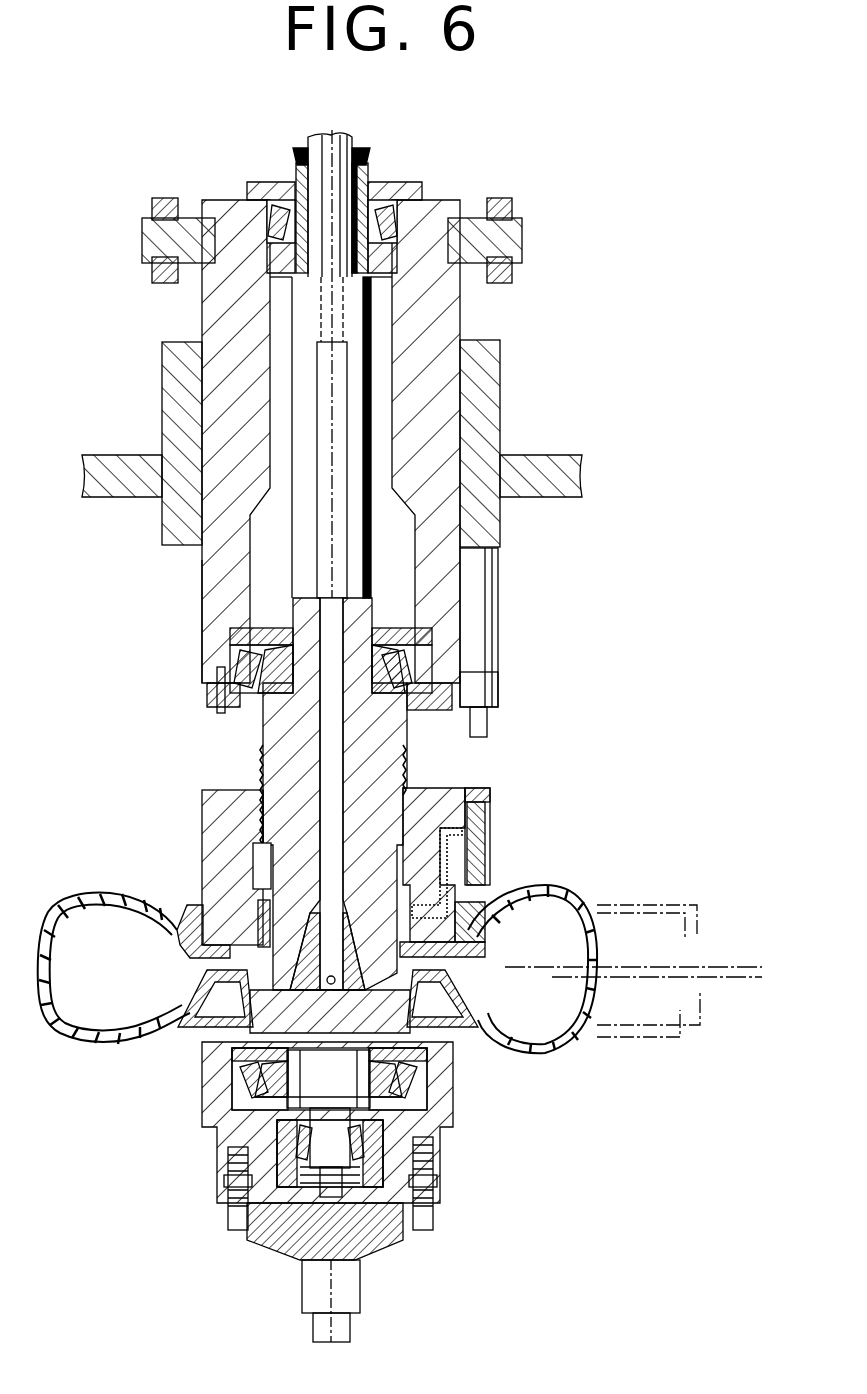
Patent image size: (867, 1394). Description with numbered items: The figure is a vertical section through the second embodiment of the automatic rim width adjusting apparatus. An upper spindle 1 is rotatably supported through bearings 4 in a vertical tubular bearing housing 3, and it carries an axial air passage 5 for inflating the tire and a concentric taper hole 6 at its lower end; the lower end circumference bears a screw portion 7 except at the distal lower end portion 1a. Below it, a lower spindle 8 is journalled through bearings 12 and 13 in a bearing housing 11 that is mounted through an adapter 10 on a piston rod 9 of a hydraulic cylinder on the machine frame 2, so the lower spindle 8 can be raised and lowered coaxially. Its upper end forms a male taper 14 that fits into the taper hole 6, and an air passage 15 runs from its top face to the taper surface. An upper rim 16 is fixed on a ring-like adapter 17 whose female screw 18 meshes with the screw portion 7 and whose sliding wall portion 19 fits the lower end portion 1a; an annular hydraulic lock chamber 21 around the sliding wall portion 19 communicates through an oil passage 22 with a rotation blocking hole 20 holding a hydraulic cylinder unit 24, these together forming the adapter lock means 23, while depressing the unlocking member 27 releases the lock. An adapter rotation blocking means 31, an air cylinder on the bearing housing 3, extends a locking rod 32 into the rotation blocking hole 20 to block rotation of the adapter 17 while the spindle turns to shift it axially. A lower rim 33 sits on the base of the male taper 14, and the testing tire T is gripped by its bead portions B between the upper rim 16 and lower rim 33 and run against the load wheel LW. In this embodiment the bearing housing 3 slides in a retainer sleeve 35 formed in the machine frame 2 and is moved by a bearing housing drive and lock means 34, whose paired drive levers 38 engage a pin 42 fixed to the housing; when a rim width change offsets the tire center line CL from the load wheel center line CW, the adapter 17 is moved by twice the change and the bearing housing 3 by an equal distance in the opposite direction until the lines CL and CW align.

The upper spindle 1 is at (300, 418).
The distal lower end portion 1a is at (250, 860).
The machine frame 2 is at (545, 495).
The bearing housing 3 is at (205, 585).
The bearings 4 is at (385, 195).
The axial air passage 5 is at (330, 604).
The taper hole 6 is at (262, 920).
The screw portion 7 is at (265, 760).
The lower spindle 8 is at (325, 1165).
The piston rod 9 is at (362, 1283).
The adapter 10 is at (385, 1225).
The bearing housing 11 is at (205, 1125).
The bearing 12 is at (245, 1083).
The bearing 13 is at (270, 1140).
The male taper 14 is at (190, 905).
The air passage 15 is at (250, 1040).
The upper rim 16 is at (480, 900).
The adapter 17 is at (415, 790).
The female screw 18 is at (262, 800).
The sliding wall portion 19 is at (258, 870).
The rotation blocking hole 20 is at (483, 792).
The hydraulic lock chamber 21 is at (195, 975).
The oil passage 22 is at (452, 828).
The adapter lock means 23 is at (496, 823).
The hydraulic cylinder unit 24 is at (470, 840).
The unlocking member 27 is at (495, 810).
The adapter rotation blocking means 31 is at (498, 640).
The locking rod 32 is at (498, 695).
The lower rim 33 is at (487, 1030).
The bearing housing drive and lock means 34 is at (503, 184).
The retainer sleeve 35 is at (485, 405).
The drive levers 38 is at (166, 200).
The pin 42 is at (142, 240).
The testing tire T is at (62, 903).
The bead portion B is at (178, 935).
The widthwise center line of the tire CL is at (738, 965).
The widthwise center line of the load wheel CW is at (708, 980).
The load wheel LW is at (620, 1035).